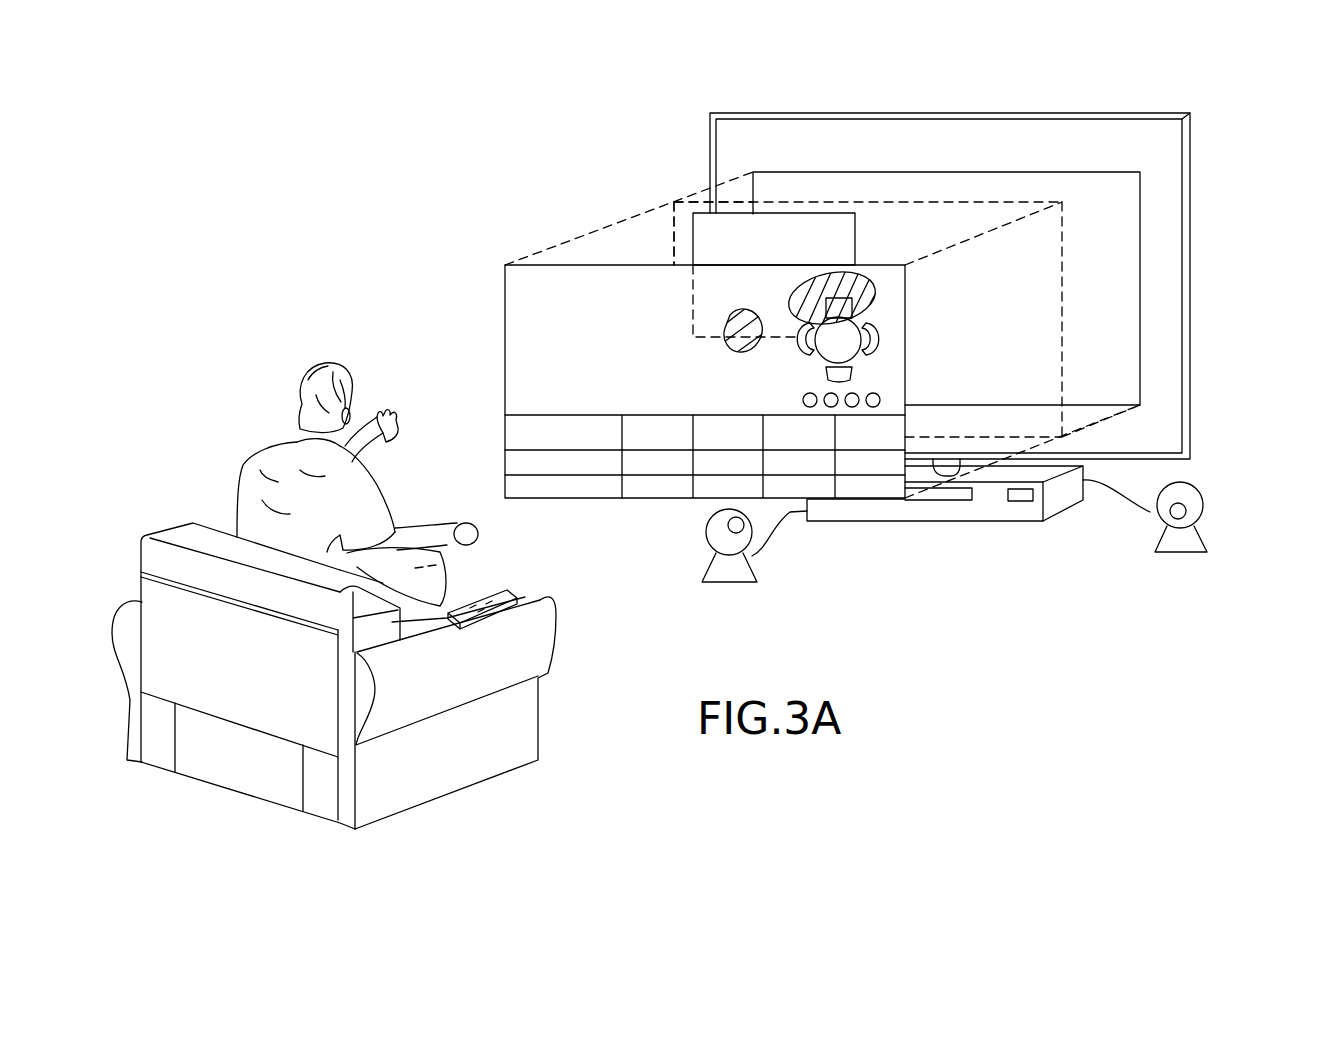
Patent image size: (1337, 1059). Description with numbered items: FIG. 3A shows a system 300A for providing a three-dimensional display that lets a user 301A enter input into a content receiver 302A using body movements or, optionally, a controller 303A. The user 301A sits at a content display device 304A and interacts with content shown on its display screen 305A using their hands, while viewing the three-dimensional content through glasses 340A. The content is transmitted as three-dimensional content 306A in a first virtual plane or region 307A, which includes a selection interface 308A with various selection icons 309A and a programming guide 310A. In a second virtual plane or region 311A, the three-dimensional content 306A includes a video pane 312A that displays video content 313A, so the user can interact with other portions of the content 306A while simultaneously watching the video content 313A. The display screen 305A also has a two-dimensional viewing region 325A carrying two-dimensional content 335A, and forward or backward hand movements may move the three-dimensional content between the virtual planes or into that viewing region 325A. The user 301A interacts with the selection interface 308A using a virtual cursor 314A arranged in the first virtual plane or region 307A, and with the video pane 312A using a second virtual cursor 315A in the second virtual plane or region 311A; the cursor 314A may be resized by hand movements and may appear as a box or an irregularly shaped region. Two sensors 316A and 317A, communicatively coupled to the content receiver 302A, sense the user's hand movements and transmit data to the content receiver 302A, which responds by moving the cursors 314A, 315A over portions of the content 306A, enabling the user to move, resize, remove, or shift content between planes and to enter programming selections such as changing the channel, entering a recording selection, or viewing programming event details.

The system 300A is at (902, 638).
The user 301A is at (308, 362).
The content receiver 302A is at (1065, 502).
The controller 303A is at (508, 602).
The content display device 304A is at (1085, 130).
The display screen 305A is at (828, 189).
The 3D content 306A is at (565, 303).
The first virtual plane or region 307A is at (504, 300).
The selection interface 308A is at (907, 342).
The selection icons 309A is at (882, 353).
The programming guide 310A is at (930, 436).
The second virtual plane or region 311A is at (948, 203).
The video pane 312A is at (693, 292).
The 3D video content 313A is at (722, 246).
The virtual cursor 314A is at (863, 276).
The virtual cursor 315A is at (727, 343).
The sensor 316A is at (1206, 514).
The sensor 317A is at (707, 541).
The 2D viewing region 325A is at (1020, 184).
The 2D content 335A is at (782, 197).
The 3D glasses 340A is at (348, 408).